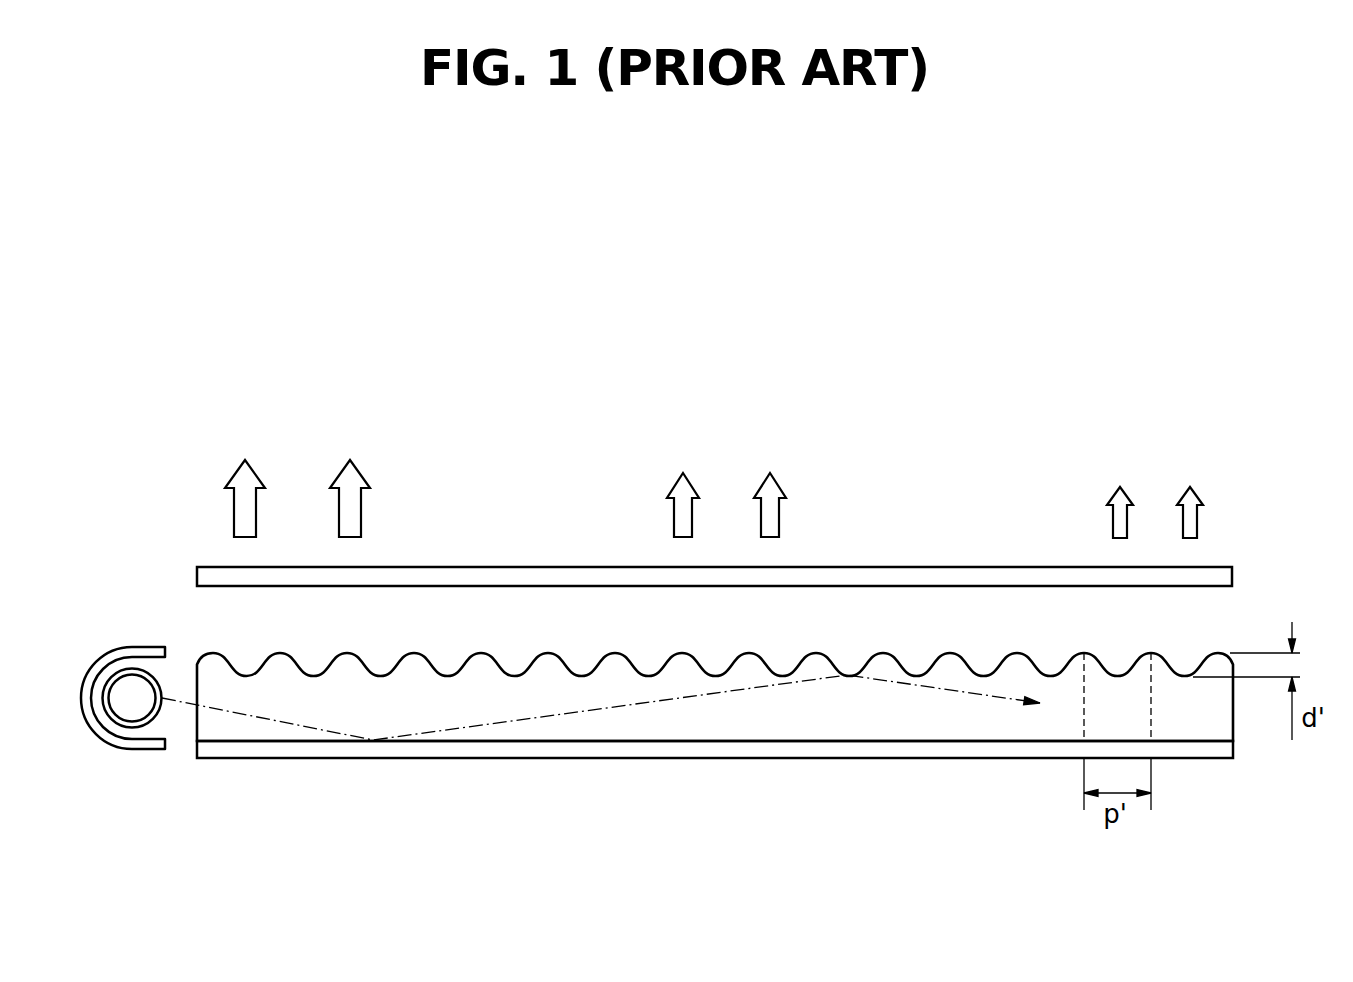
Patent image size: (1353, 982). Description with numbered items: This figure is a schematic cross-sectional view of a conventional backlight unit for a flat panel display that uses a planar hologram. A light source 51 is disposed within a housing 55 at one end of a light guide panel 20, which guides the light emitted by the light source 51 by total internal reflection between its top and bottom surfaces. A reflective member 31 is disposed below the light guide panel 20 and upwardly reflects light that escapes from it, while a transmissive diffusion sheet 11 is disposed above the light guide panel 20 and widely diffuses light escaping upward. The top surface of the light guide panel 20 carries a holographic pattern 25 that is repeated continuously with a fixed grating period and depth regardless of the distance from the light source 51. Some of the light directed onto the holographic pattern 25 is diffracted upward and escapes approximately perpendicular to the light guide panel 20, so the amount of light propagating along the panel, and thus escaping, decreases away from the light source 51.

The transmissive diffusion sheet 11 is at (1232, 580).
The light guide panel 20 is at (719, 721).
The holographic pattern 25 is at (1177, 658).
The reflective member 31 is at (764, 748).
The light source 51 is at (136, 746).
The housing 55 is at (137, 650).